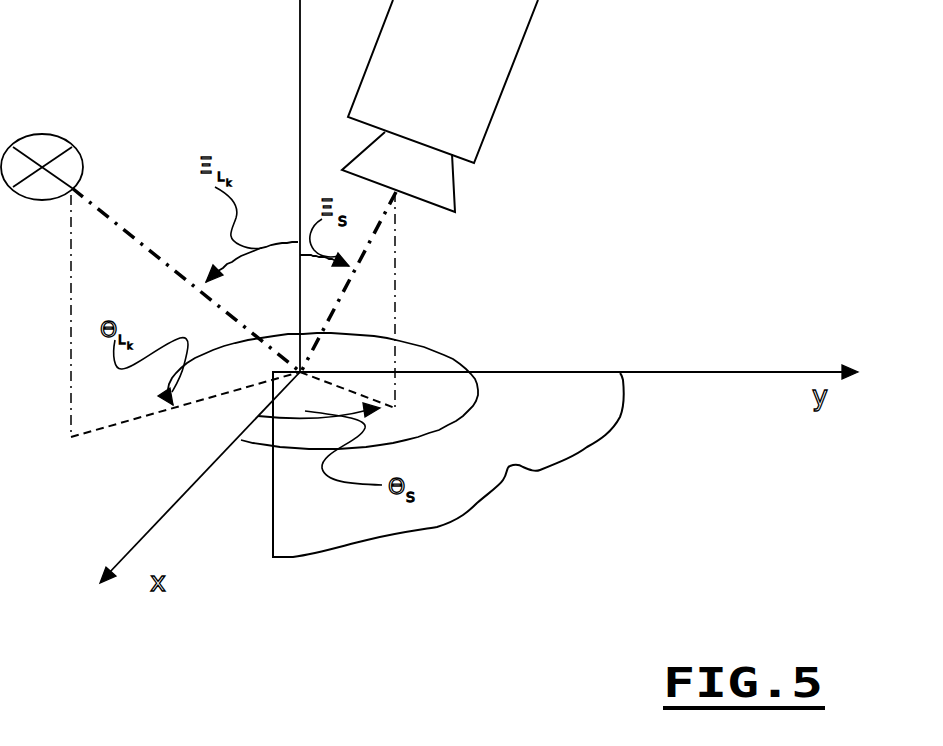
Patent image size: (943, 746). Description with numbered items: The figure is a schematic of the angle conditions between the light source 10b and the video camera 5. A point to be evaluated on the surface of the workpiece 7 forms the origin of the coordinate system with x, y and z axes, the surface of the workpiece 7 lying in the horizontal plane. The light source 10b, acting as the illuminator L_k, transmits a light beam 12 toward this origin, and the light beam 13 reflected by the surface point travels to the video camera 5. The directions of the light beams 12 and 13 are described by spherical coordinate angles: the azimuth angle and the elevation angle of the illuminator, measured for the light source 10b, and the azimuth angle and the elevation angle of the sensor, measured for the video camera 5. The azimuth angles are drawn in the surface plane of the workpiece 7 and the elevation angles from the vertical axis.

The illuminator 10b is at (60, 145).
The light beam 12 is at (113, 220).
The video camera 5 is at (485, 75).
The light beam 13 is at (330, 312).
The workpiece 7 is at (570, 388).